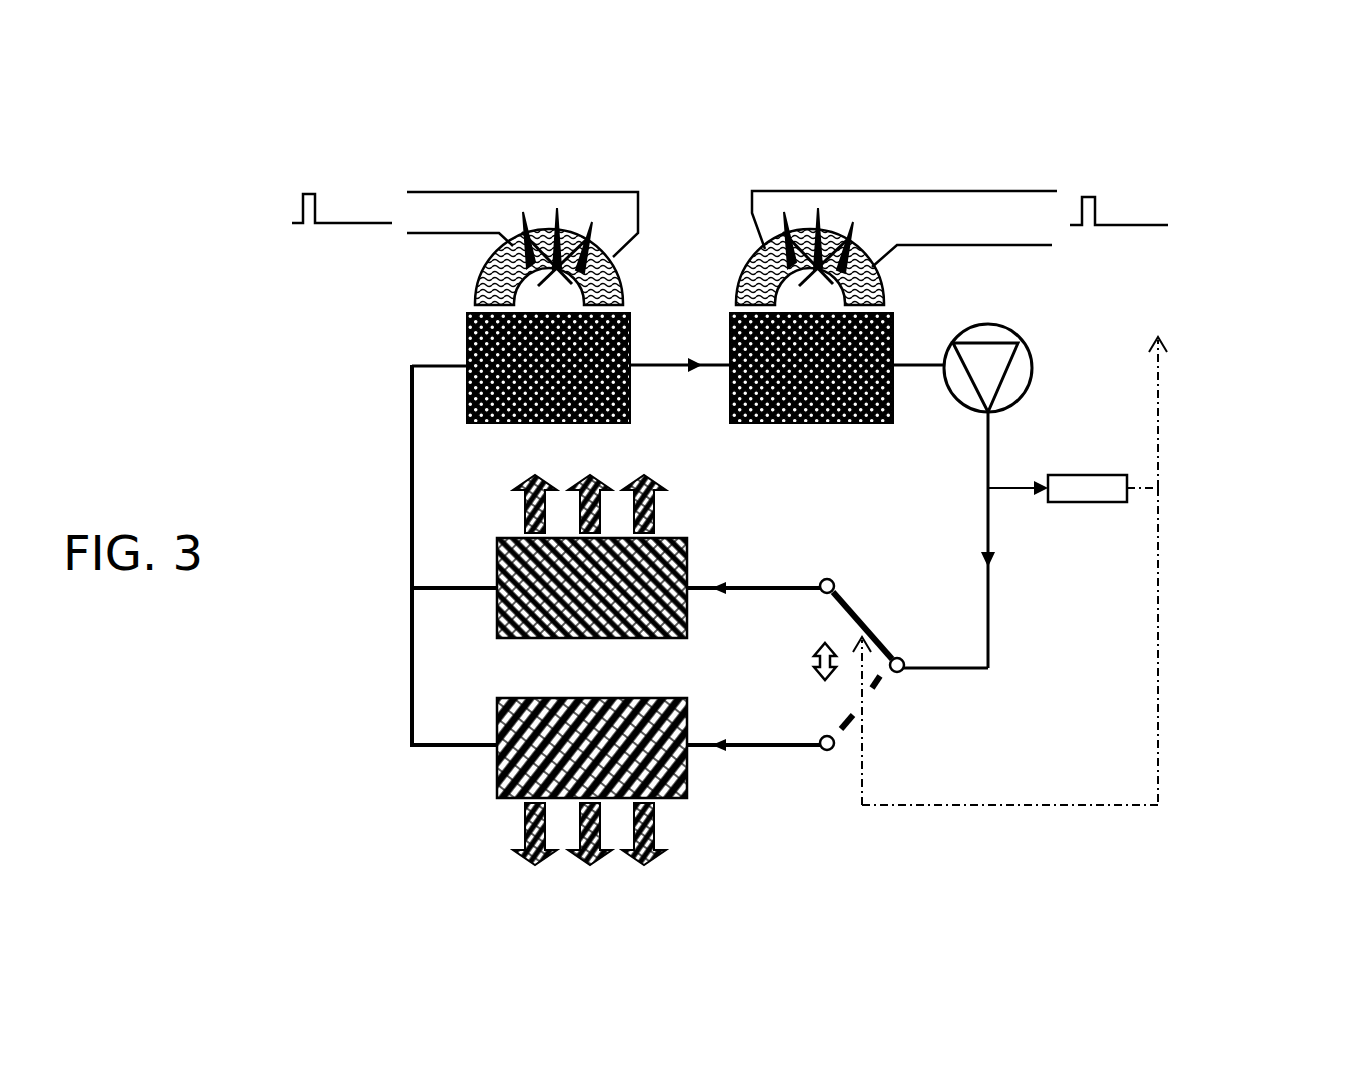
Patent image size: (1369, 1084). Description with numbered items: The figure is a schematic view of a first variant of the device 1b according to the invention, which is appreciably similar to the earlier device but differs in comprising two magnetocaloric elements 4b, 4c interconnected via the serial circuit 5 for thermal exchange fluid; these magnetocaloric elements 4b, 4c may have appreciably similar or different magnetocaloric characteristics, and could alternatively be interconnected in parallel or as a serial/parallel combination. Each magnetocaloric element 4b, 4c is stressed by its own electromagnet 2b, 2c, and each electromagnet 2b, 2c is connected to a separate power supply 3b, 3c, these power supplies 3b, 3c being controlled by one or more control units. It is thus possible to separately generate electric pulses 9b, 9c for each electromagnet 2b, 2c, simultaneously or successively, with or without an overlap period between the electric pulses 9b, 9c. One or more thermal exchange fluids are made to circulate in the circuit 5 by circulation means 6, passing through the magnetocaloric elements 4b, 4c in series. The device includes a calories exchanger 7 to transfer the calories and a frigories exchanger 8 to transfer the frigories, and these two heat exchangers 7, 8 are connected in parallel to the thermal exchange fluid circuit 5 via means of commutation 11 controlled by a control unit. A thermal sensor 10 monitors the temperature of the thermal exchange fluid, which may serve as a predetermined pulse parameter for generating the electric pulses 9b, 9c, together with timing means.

The device 1b is at (362, 648).
The electromagnet 2b is at (626, 278).
The electromagnet 2c is at (747, 267).
The power supply 3b is at (563, 187).
The power supply 3c is at (989, 172).
The magnetocaloric element 4b is at (465, 350).
The magnetocaloric element 4c is at (818, 423).
The circuit for thermal exchange fluid 5 is at (408, 480).
The circulation means 6 is at (1018, 387).
The calories exchanger 7 is at (590, 587).
The frigories exchanger 8 is at (517, 757).
The electric pulse 9b is at (313, 180).
The electric pulse 9c is at (1130, 189).
The thermal sensor 10 is at (1093, 490).
The means of commutation 11 is at (885, 705).